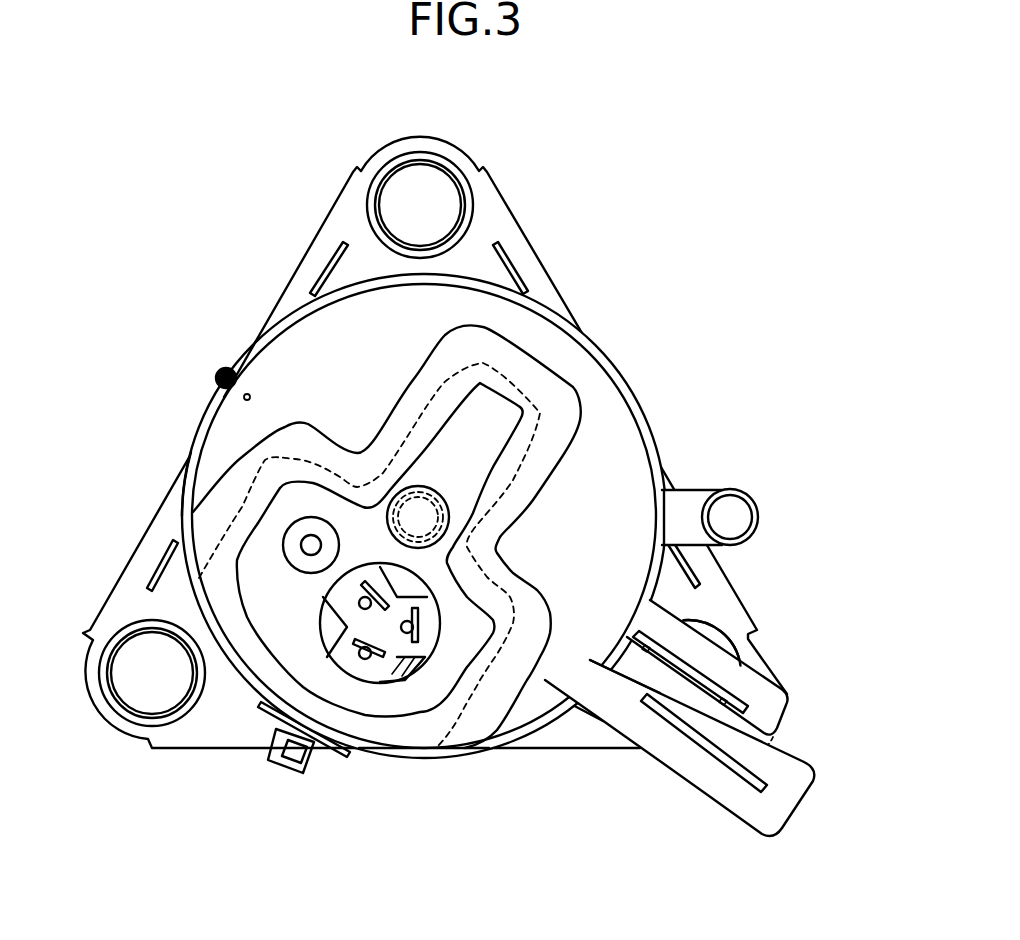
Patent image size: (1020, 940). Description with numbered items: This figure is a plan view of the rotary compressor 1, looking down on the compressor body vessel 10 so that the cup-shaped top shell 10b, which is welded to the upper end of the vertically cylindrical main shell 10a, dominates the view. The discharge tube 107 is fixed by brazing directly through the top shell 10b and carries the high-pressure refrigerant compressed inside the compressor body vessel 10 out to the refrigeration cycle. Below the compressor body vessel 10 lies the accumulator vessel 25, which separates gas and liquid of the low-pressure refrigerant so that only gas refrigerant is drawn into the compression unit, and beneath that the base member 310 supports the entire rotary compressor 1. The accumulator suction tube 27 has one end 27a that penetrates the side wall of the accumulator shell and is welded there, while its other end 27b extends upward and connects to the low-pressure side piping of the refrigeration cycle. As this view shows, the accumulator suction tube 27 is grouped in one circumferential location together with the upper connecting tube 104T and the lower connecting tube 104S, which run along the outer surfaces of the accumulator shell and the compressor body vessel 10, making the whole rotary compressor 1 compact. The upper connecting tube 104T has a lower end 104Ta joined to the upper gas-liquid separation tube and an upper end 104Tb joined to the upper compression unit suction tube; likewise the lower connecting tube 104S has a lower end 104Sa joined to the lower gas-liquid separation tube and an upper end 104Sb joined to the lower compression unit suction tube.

The rotary compressor 1 is at (604, 141).
The compressor body vessel 10 is at (614, 349).
The main shell 10a is at (191, 452).
The top shell 10b is at (320, 357).
The accumulator vessel 25 is at (490, 755).
The accumulator suction tube 27 is at (712, 495).
The one end of the accumulator suction tube 27a is at (687, 505).
The another end of the accumulator suction tube 27b is at (760, 512).
The lower connecting tube 104S is at (773, 704).
The lower end of the lower connecting tube 104Sa is at (650, 608).
The upper end of the lower connecting tube 104Sb is at (627, 654).
The upper connecting tube 104T is at (703, 783).
The lower end of the upper connecting tube 104Ta is at (598, 666).
The upper end of the upper connecting tube 104Tb is at (642, 690).
The discharge tube 107 is at (388, 517).
The base member 310 is at (493, 210).